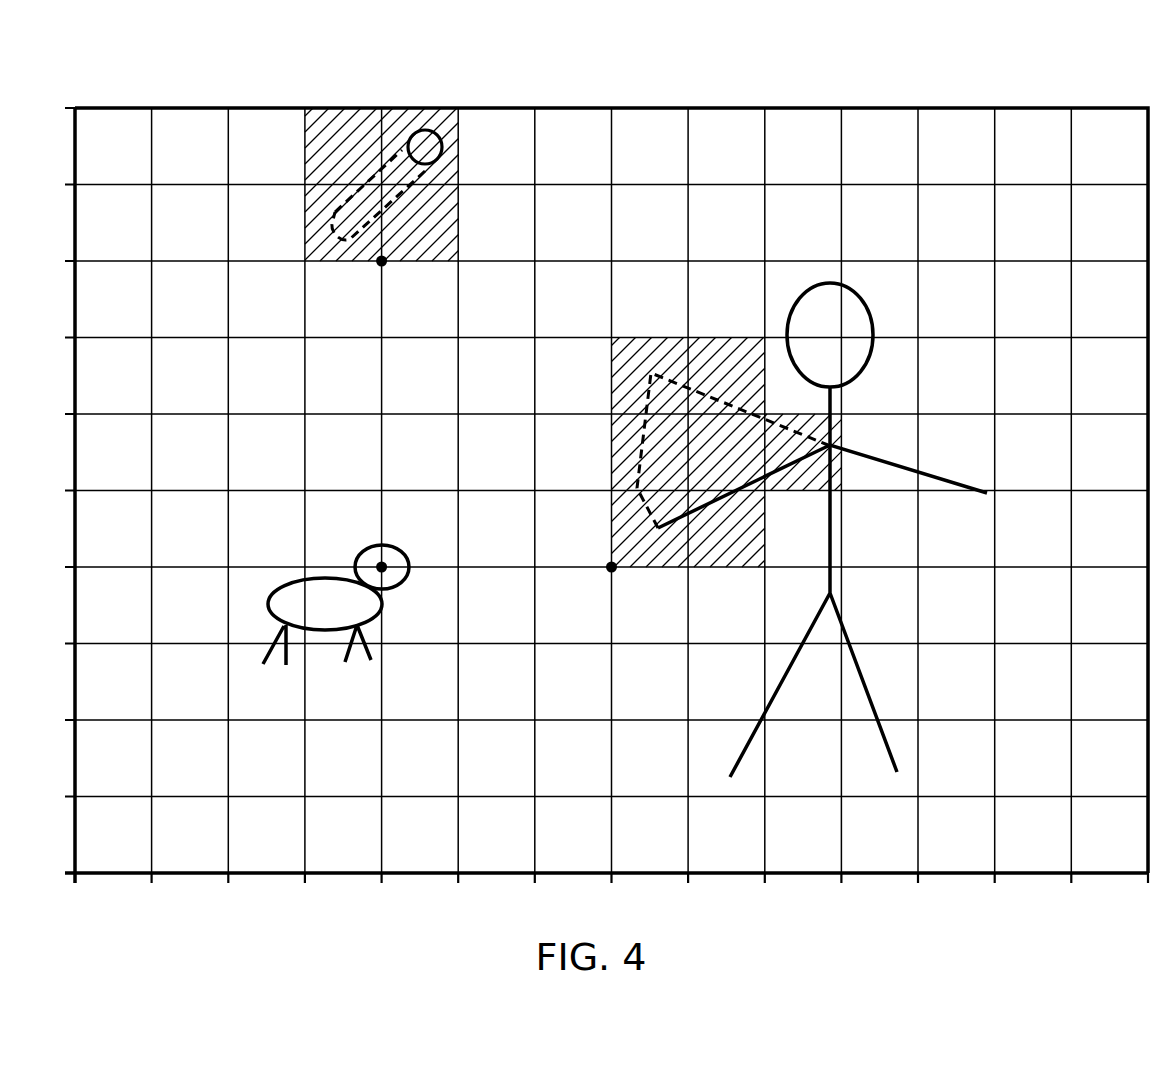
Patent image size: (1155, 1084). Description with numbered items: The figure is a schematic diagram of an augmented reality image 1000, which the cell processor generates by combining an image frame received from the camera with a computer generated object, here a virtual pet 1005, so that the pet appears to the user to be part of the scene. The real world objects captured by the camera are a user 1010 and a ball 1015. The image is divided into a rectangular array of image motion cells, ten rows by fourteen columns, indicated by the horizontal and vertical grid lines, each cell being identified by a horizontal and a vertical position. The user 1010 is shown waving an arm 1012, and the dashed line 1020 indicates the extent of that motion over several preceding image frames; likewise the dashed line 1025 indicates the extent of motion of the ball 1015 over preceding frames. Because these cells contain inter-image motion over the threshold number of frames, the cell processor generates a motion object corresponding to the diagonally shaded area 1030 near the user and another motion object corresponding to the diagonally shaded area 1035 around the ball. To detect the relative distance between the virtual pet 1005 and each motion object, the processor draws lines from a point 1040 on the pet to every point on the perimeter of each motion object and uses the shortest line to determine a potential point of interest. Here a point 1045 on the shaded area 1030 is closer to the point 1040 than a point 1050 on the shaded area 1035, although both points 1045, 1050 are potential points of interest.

The augmented reality image 1000 is at (1100, 94).
The virtual pet 1005 is at (297, 602).
The user 1010 is at (870, 312).
The arm 1012 is at (768, 476).
The ball 1015 is at (441, 152).
The dashed region of interest 1020 is at (636, 473).
The dashed line 1025 is at (338, 204).
The shaded area 1030 is at (704, 553).
The shaded area 1035 is at (413, 247).
The point 1040 is at (387, 572).
The point 1045 is at (607, 571).
The point 1050 is at (378, 264).